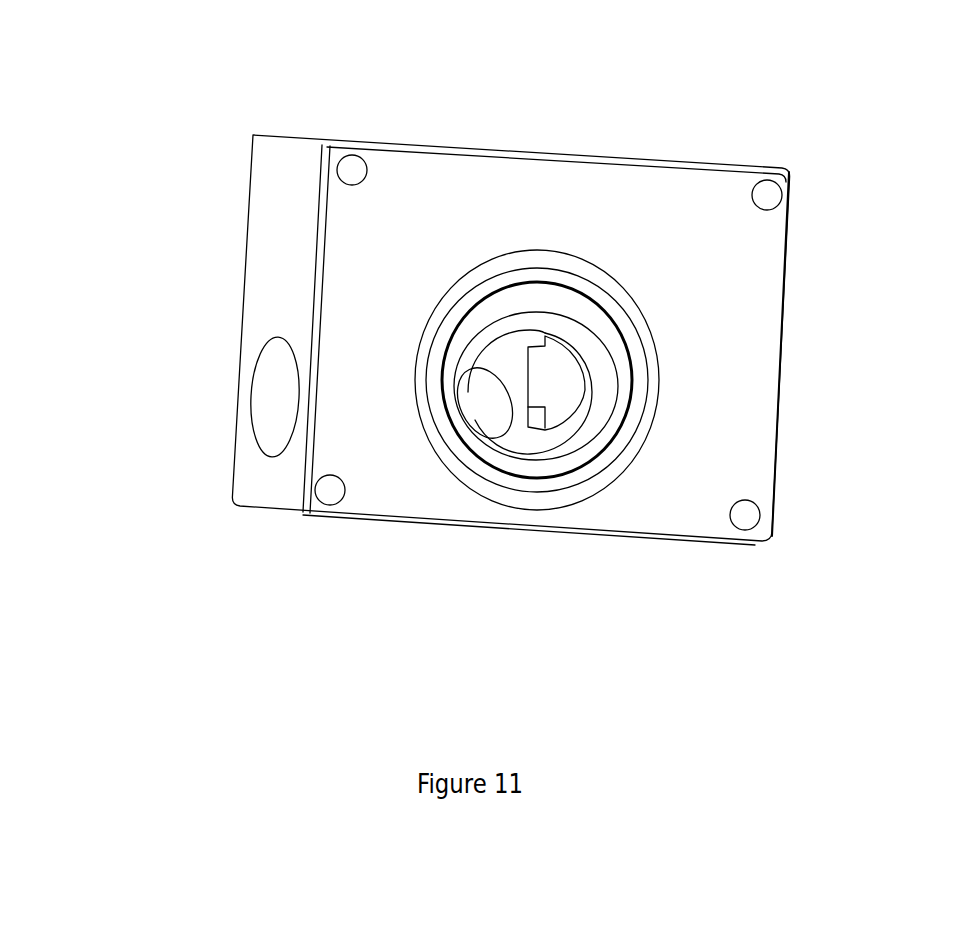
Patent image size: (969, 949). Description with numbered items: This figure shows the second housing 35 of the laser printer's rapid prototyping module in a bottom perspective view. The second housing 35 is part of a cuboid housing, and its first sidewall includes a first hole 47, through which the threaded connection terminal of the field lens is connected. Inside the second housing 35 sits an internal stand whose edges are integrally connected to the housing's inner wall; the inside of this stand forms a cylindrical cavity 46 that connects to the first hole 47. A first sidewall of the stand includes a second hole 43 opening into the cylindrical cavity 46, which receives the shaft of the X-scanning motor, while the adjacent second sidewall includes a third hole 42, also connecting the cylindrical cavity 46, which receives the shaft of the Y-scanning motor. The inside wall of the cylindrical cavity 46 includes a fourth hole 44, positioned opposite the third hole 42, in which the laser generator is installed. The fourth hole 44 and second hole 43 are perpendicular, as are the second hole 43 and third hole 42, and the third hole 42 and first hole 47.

The second housing 35 is at (638, 188).
The third hole 42 is at (561, 388).
The second hole 43 is at (492, 410).
The fourth hole 44 is at (272, 394).
The cylindrical cavity 46 is at (512, 347).
The first hole 47 is at (470, 291).